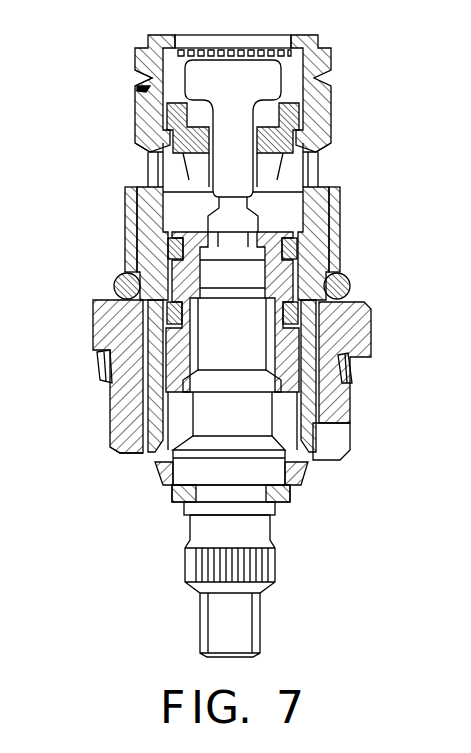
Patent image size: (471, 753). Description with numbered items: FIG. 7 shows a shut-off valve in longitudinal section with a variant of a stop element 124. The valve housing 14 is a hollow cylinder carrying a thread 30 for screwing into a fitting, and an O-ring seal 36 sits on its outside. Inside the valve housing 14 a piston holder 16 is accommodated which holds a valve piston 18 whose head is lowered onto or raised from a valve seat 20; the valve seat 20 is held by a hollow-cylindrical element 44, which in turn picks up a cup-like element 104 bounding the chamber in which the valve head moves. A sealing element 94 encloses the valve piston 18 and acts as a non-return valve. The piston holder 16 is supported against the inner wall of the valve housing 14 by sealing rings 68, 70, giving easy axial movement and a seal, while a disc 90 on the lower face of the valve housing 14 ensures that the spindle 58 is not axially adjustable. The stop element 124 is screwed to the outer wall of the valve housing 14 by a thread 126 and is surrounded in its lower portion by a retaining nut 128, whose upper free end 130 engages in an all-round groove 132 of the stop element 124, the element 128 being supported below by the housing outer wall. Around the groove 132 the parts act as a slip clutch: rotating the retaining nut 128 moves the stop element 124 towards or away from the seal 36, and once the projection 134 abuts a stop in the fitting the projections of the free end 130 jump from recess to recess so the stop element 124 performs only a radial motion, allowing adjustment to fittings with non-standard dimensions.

The valve housing 14 is at (300, 403).
The piston holder 16 is at (308, 197).
The valve piston 18 is at (258, 70).
The valve seat 20 is at (333, 118).
The thread 30 is at (343, 243).
The O-ring seal 36 is at (113, 283).
The hollow-cylindrical element 44 is at (318, 147).
The spindle 58 is at (238, 343).
The sealing ring 68 is at (160, 330).
The sealing ring 70 is at (232, 313).
The disc 90 is at (280, 493).
The sealing element 94 is at (145, 143).
The cup-like element 104 is at (148, 95).
The stop element 124 is at (360, 342).
The thread 126 is at (130, 413).
The retaining nut 128 is at (118, 443).
The upper free end 130 is at (97, 363).
The groove 132 is at (363, 373).
The projection 134 is at (357, 302).